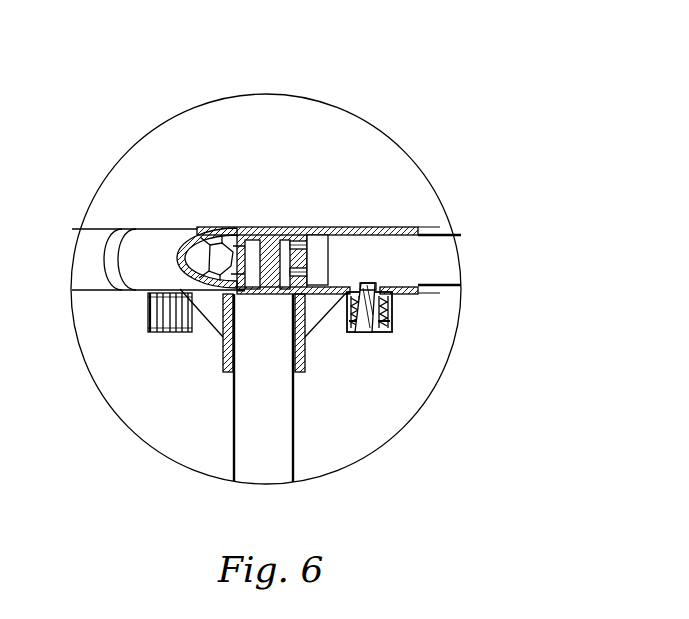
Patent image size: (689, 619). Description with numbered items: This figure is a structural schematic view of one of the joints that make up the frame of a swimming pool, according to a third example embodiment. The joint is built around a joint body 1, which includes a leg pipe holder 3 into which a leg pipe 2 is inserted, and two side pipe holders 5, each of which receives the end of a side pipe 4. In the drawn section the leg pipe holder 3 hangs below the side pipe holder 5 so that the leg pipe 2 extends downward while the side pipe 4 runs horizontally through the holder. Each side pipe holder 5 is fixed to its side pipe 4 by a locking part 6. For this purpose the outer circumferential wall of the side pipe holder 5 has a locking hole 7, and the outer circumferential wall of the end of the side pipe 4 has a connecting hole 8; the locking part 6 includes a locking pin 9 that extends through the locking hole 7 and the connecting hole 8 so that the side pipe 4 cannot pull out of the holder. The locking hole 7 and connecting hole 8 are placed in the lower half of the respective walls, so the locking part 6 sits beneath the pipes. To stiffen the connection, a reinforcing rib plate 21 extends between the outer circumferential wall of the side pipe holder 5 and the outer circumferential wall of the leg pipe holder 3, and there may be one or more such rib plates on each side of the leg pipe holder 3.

The joint body 1 is at (262, 228).
The leg pipe 2 is at (295, 433).
The leg pipe holder 3 is at (302, 348).
The side pipe 4 is at (92, 255).
The side pipe holder 5 is at (158, 235).
The locking part 6 is at (385, 328).
The locking hole 7 is at (383, 292).
The connecting hole 8 is at (377, 284).
The locking pin 9 is at (388, 310).
The reinforcing rib plate 21 is at (210, 308).